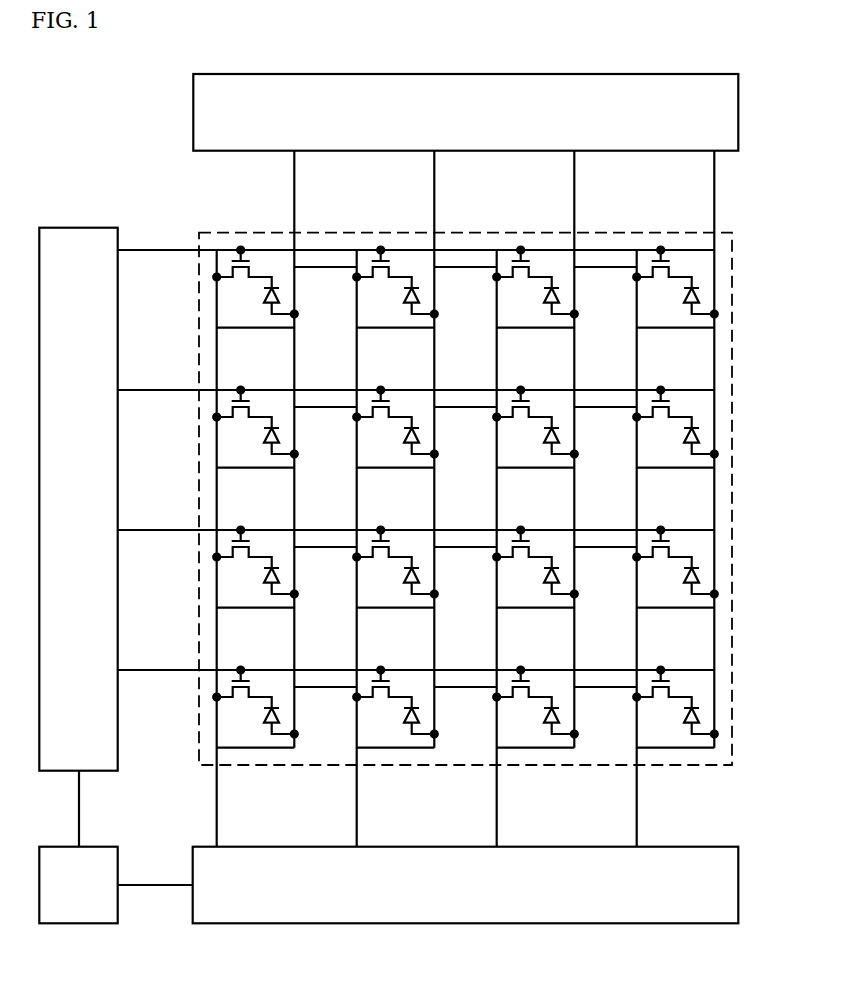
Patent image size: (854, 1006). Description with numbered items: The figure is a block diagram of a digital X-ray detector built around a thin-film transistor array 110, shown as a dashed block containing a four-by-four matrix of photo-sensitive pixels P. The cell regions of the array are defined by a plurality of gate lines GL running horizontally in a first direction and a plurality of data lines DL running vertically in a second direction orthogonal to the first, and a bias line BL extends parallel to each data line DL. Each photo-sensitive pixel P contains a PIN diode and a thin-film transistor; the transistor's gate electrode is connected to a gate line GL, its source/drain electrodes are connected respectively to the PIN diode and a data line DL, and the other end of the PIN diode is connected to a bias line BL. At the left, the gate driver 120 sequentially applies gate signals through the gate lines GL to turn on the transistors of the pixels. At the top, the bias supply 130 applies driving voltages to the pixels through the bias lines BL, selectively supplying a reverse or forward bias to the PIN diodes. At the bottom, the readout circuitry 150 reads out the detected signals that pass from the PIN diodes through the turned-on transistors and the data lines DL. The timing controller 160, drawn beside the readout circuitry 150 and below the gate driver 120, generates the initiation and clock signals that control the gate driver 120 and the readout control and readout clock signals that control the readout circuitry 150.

The thin-film transistor array 110 is at (692, 765).
The gate driver 120 is at (78, 499).
The bias supply 130 is at (465, 112).
The readout circuitry 150 is at (466, 885).
The timing controller 160 is at (115, 847).
The photo-sensitive pixel P is at (692, 250).
The gate line GL is at (416, 446).
The bias line BL is at (504, 449).
The data line DL is at (427, 548).